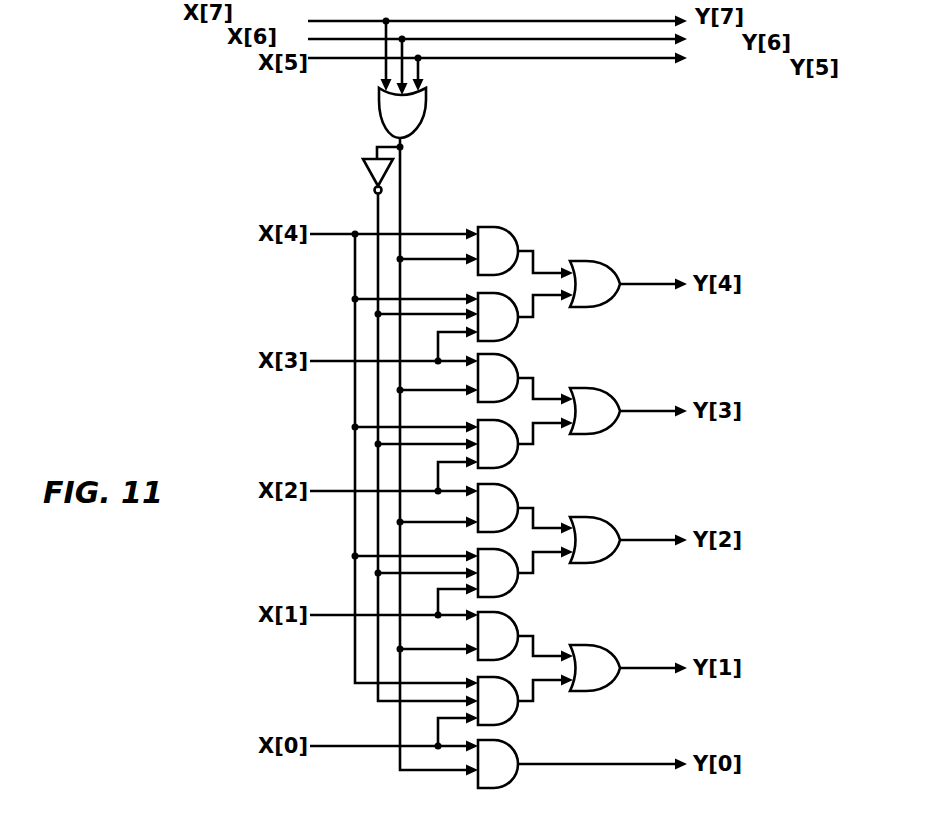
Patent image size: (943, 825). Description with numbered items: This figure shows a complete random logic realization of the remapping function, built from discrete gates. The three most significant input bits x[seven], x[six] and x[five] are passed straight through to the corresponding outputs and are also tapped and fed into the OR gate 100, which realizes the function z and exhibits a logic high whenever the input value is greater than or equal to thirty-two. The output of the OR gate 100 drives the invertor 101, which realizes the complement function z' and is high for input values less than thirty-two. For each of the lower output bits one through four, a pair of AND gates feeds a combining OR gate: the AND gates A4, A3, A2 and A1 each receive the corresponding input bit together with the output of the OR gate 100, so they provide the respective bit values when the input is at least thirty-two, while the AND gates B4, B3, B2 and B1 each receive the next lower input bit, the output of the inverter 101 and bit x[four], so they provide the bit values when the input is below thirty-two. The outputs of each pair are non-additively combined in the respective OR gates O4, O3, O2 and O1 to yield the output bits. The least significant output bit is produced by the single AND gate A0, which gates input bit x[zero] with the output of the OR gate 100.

The OR gate 100 is at (426, 106).
The invertor 101 is at (363, 173).
The AND gate Ai A4 is at (498, 251).
The AND gate Bi B4 is at (498, 317).
The AND gate Ai A3 is at (498, 378).
The AND gate Bi B3 is at (498, 444).
The AND gate Ai A2 is at (498, 508).
The AND gate Bi B2 is at (498, 573).
The AND gate Ai A1 is at (498, 636).
The AND gate Bi B1 is at (498, 701).
The AND gate Ai A0 is at (498, 764).
The OR gate Oi O4 is at (595, 284).
The OR gate Oi O3 is at (595, 411).
The OR gate Oi O2 is at (595, 540).
The OR gate Oi O1 is at (595, 668).